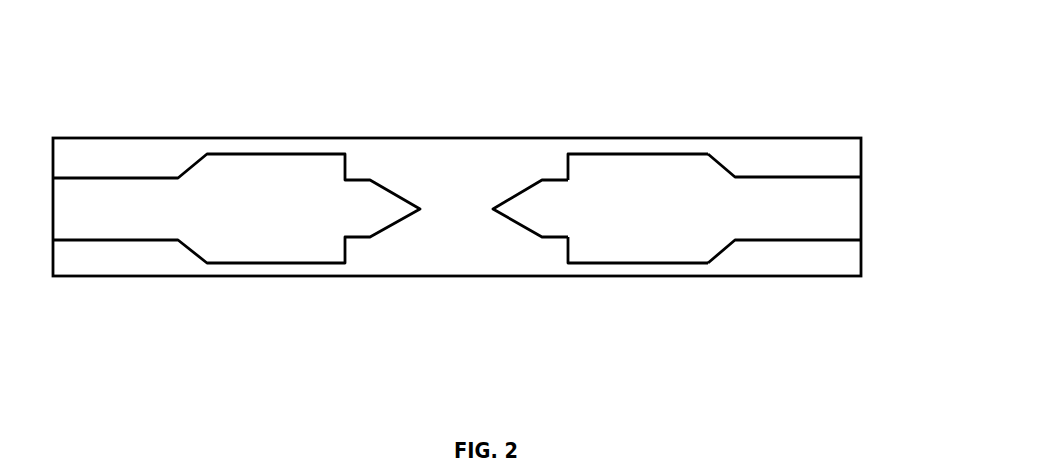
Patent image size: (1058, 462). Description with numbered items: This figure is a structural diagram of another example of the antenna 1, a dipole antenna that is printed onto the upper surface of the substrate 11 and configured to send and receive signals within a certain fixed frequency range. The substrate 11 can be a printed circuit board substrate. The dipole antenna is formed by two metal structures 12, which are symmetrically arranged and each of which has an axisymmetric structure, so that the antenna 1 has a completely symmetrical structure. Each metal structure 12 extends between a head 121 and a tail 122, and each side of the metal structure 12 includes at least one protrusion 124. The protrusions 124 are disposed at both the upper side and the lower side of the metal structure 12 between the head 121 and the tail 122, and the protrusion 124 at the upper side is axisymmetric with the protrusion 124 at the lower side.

The antenna 1 is at (508, 222).
The substrate 11 is at (453, 253).
The metal structure 12 is at (696, 220).
The head 121 is at (528, 204).
The tail 122 is at (824, 205).
The protrusion 124 is at (640, 175).